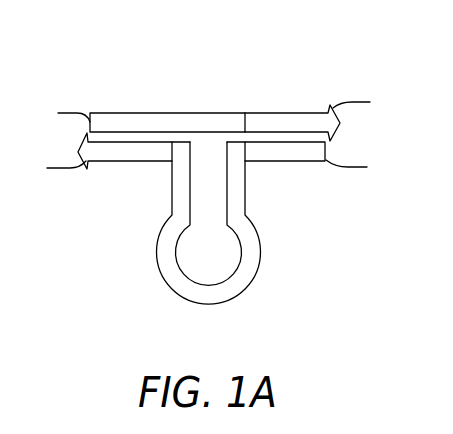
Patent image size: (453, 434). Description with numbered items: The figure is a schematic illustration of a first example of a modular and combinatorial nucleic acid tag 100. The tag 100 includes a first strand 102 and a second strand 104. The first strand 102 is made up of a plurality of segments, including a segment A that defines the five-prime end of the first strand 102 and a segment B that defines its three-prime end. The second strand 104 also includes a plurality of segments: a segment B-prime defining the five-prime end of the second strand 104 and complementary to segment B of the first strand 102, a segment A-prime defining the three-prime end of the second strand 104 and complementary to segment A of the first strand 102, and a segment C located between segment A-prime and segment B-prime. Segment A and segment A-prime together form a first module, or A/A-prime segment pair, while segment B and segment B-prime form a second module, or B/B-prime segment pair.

The modular and combinatorial nucleic acid tag 100 is at (270, 52).
The first strand 102 is at (120, 112).
The second strand 104 is at (157, 252).